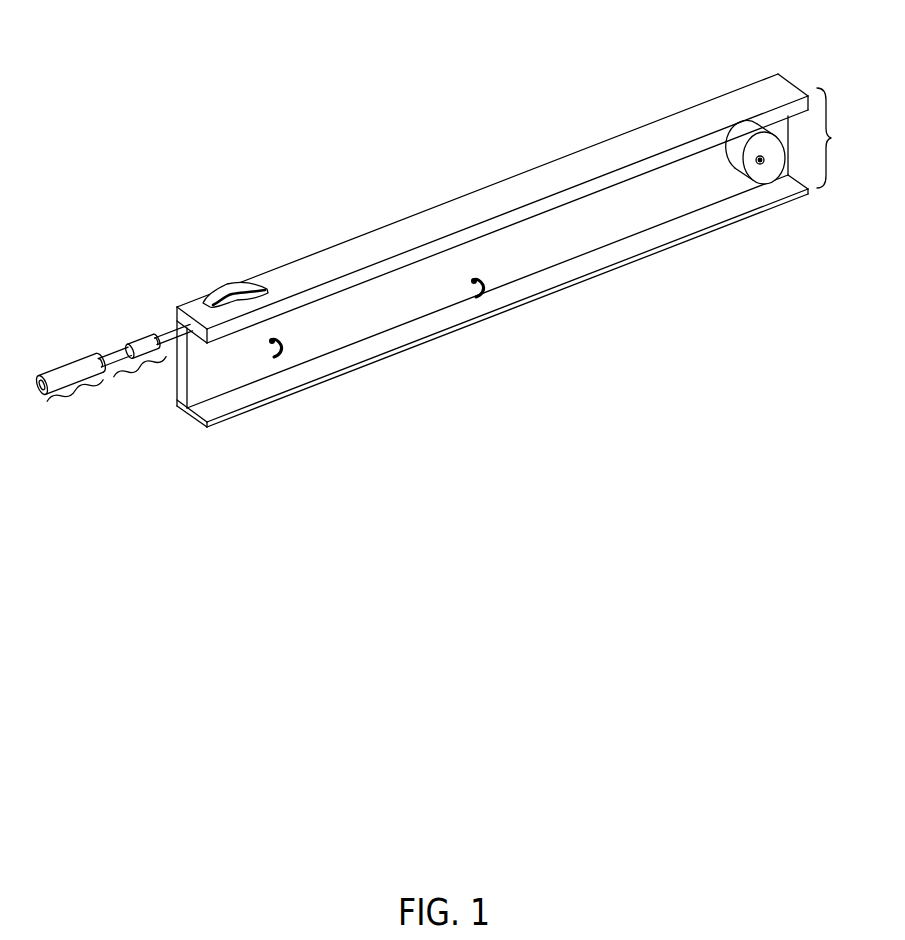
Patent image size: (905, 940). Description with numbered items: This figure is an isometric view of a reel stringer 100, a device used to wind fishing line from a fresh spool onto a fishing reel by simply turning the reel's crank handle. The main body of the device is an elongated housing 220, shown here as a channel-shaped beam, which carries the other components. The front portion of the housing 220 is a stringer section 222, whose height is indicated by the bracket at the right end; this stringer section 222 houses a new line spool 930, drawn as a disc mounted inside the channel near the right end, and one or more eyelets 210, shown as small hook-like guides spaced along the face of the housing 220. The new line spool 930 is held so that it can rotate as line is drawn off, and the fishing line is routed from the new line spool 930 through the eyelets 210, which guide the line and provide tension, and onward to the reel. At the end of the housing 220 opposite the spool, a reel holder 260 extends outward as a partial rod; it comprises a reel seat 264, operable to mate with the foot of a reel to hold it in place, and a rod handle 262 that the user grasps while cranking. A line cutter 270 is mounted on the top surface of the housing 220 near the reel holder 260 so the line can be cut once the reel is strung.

The reel stringer 100 is at (118, 97).
The eyelets 210 is at (284, 348).
The housing 220 is at (195, 421).
The stringer section 222 is at (847, 138).
The reel holder 260 is at (118, 357).
The rod handle 262 is at (79, 395).
The reel seat 264 is at (143, 375).
The line cutter 270 is at (223, 285).
The new line spool 930 is at (755, 178).